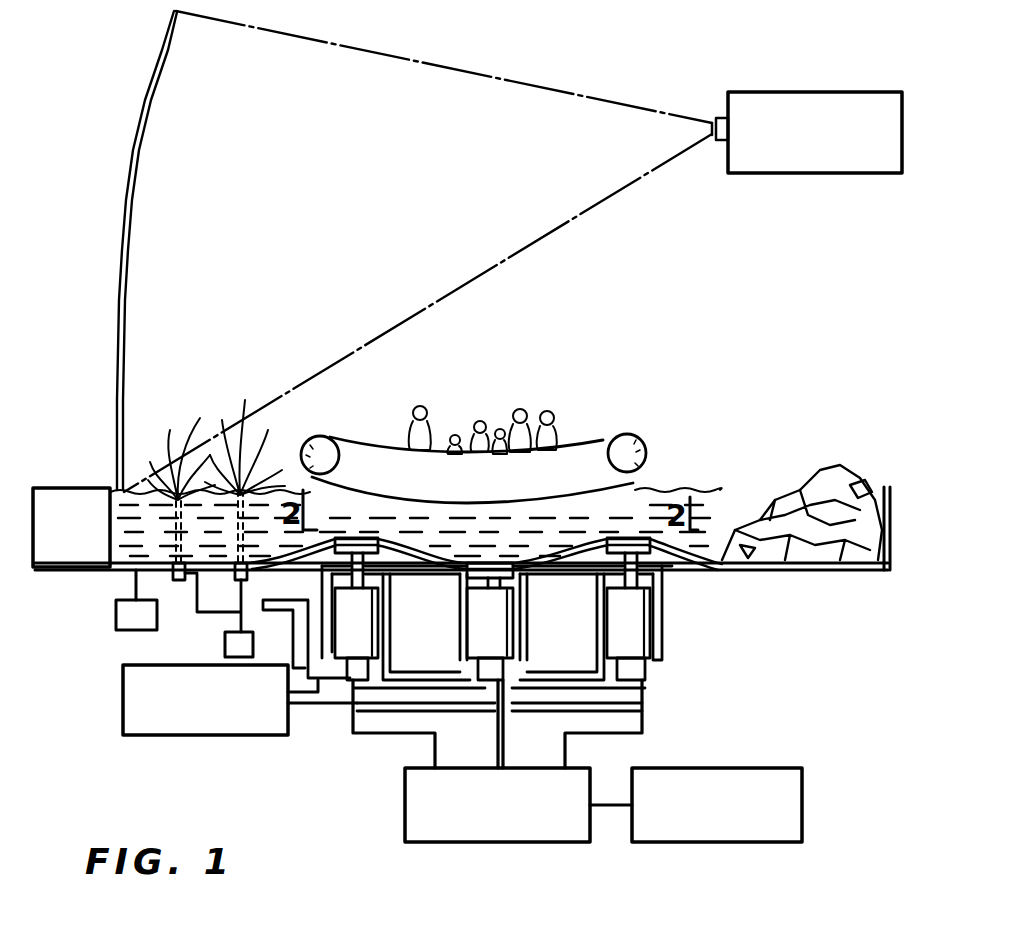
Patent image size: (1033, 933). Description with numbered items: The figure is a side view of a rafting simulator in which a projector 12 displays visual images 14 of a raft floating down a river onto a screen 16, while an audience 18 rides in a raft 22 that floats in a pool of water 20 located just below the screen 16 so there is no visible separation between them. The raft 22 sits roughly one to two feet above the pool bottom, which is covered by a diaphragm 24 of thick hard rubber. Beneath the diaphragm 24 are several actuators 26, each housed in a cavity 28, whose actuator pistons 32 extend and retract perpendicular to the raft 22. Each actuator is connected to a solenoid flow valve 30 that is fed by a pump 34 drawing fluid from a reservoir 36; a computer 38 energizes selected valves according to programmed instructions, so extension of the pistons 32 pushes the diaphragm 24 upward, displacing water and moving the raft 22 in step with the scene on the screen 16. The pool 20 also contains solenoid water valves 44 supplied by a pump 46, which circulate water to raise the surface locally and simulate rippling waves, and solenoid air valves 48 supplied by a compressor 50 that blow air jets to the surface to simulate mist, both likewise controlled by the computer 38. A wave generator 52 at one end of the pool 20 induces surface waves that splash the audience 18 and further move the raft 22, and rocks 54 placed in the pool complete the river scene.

The projector 12 is at (807, 132).
The visual images 14 is at (418, 251).
The screen 16 is at (134, 155).
The audience 18 is at (495, 405).
The pool of water 20 is at (650, 480).
The raft 22 is at (600, 442).
The diaphragm 24 is at (700, 548).
The actuators 26 is at (660, 645).
The cavity 28 is at (665, 580).
The solenoid flow valve 30 is at (648, 672).
The actuator piston 32 is at (700, 573).
The pump 34 is at (497, 761).
The reservoir 36 is at (696, 805).
The computer 38 is at (240, 700).
The solenoid water valves 44 is at (183, 584).
The pump 46 is at (116, 612).
The solenoid air valves 48 is at (249, 578).
The compressor 50 is at (256, 648).
The wave generator 52 is at (71, 527).
The rocks 54 is at (833, 462).